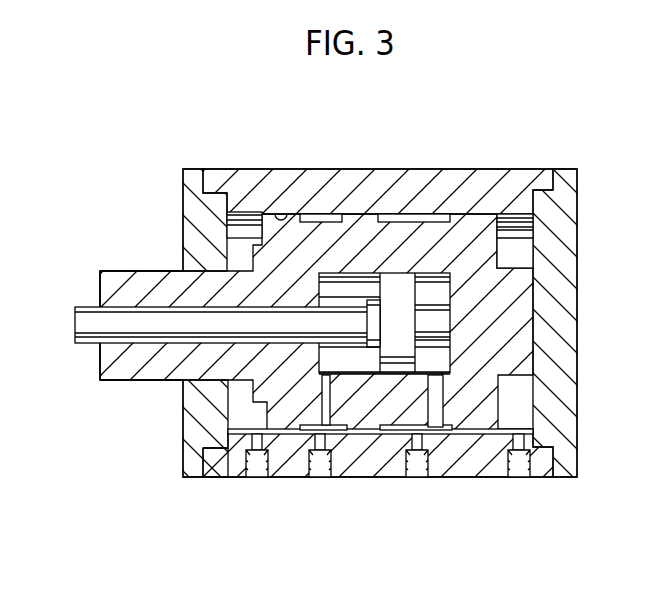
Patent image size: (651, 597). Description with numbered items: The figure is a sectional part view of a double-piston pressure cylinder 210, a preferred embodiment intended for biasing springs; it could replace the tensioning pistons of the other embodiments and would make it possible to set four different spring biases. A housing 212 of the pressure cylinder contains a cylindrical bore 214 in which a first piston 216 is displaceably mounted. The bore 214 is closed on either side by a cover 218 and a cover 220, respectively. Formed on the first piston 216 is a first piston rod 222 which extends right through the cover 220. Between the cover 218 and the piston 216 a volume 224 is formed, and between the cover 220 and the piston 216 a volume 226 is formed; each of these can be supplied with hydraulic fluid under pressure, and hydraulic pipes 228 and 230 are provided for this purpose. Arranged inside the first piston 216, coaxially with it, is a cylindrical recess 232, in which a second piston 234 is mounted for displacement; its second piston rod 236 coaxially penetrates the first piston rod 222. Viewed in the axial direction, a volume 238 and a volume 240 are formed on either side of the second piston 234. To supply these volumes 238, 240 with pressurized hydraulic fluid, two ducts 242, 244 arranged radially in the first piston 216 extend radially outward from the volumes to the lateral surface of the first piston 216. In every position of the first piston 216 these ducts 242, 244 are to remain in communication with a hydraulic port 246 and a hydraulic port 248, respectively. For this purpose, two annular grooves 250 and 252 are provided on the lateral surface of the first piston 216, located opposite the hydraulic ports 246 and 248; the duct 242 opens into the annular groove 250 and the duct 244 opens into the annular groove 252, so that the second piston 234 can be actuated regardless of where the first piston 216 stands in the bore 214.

The double-piston pressure cylinder 210 is at (472, 160).
The housing 212 is at (375, 163).
The cylindrical bore 214 is at (283, 212).
The first piston 216 is at (518, 303).
The cover 218 is at (564, 228).
The cover 220 is at (192, 220).
The first piston rod 222 is at (122, 283).
The volume 224 is at (516, 227).
The volume 226 is at (242, 227).
The hydraulic pipe 228 is at (520, 465).
The hydraulic pipe 230 is at (257, 465).
The cylindrical recess 232 is at (365, 430).
The second piston 234 is at (405, 440).
The second piston rod 236 is at (85, 322).
The volume 238 is at (352, 368).
The volume 240 is at (468, 400).
The duct 242 is at (298, 427).
The duct 244 is at (445, 355).
The hydraulic port 246 is at (338, 365).
The hydraulic port 248 is at (440, 413).
The annular groove 250 is at (325, 213).
The annular groove 252 is at (407, 213).